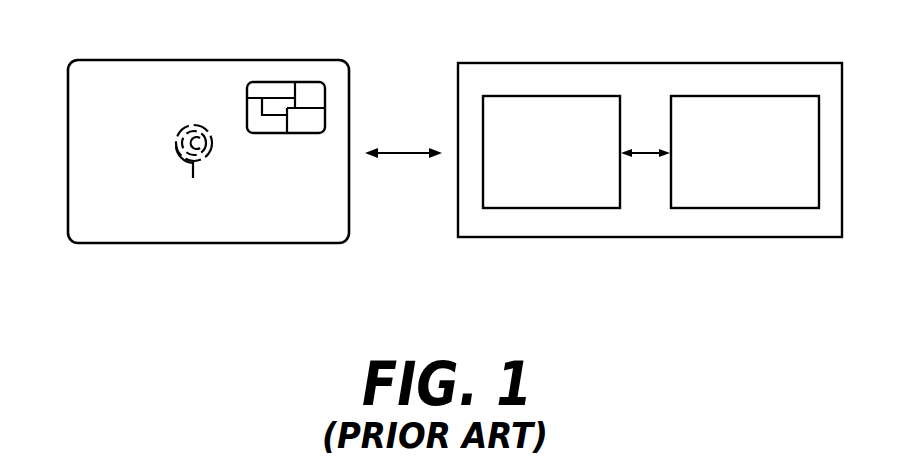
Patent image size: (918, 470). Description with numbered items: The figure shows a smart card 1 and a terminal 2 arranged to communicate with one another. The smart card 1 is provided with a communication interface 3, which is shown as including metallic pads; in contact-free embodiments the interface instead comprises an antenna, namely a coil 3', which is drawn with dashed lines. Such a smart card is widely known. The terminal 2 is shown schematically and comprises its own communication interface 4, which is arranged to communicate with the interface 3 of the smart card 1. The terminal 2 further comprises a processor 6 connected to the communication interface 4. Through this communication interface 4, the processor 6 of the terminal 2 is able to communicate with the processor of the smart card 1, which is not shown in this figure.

The smart card 1 is at (107, 122).
The communication interface 3 is at (286, 76).
The coil 3' is at (193, 98).
The terminal 2 is at (775, 215).
The communication interface 4 is at (555, 177).
The processor 6 is at (770, 178).